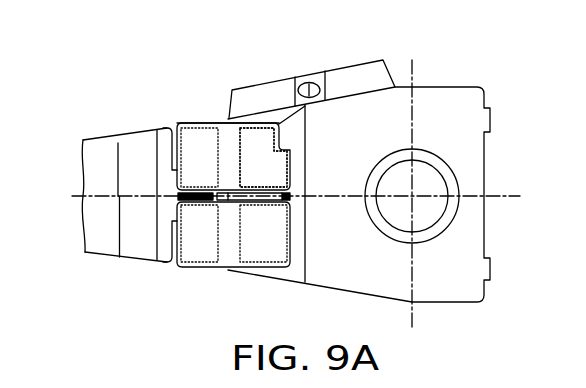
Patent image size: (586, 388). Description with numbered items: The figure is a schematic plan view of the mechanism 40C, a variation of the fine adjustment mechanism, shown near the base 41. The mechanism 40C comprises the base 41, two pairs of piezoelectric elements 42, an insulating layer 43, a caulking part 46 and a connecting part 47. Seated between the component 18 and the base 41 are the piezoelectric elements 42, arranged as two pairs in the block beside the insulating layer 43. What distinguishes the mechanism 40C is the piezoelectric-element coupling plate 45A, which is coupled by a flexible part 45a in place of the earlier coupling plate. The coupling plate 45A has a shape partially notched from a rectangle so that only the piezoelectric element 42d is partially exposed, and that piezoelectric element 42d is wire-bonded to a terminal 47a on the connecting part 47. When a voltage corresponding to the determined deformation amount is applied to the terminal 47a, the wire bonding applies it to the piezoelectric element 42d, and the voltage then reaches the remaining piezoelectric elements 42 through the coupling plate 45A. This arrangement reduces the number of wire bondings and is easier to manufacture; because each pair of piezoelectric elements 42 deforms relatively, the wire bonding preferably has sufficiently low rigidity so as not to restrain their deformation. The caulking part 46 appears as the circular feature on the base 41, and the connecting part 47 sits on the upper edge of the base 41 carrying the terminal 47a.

The mechanism 40C is at (58, 40).
The connector part 18 is at (87, 256).
The insulating layer 43 is at (163, 134).
The piezoelectric elements 42 is at (257, 263).
The piezoelectric element 42d is at (264, 137).
The piezoelectric-element coupling plate 45A is at (246, 121).
The flexible part 45a is at (303, 197).
The base 41 is at (485, 168).
The caulking part 46 is at (433, 151).
The connecting part 47 is at (367, 73).
The terminal 47a is at (313, 90).